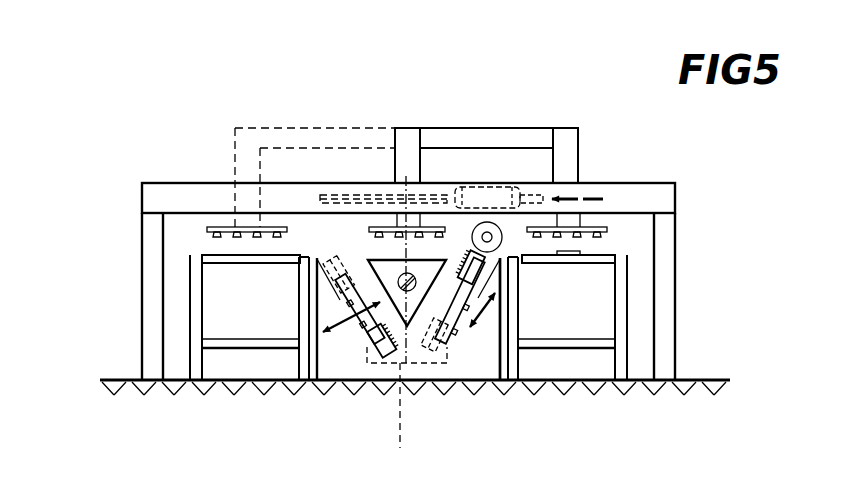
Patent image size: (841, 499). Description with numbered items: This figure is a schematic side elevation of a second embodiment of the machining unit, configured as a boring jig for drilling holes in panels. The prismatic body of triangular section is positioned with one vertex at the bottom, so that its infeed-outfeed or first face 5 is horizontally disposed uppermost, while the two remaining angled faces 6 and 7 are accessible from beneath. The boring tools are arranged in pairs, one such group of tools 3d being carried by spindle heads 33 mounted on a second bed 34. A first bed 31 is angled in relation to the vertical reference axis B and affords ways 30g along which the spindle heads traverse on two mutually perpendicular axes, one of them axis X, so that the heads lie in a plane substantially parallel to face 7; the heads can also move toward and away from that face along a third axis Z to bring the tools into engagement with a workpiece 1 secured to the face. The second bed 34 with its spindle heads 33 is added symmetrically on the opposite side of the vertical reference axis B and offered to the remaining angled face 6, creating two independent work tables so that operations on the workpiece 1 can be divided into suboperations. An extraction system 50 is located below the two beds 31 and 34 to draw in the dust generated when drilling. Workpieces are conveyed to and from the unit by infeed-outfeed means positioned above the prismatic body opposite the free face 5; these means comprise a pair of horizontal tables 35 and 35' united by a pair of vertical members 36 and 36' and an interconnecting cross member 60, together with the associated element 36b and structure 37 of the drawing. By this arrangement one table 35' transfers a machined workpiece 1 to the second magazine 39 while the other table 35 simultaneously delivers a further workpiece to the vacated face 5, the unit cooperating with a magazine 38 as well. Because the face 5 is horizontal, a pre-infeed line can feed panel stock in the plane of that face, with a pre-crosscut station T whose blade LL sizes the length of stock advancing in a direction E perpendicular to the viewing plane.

The workpiece 1 is at (572, 256).
The first face 5 is at (373, 252).
The angled face 6 is at (362, 272).
The angled face 7 is at (423, 312).
The group of tools 3d is at (370, 363).
The ways 30g is at (457, 332).
The bed 31 is at (490, 333).
The spindle heads 33 is at (335, 293).
The second bed 34 is at (383, 347).
The horizontal table 35 is at (643, 180).
The horizontal table 35' is at (382, 137).
The vertical member 36 is at (423, 136).
The vertical member 36' is at (404, 200).
The pivot arm 36b is at (490, 258).
The portal beam 37 is at (160, 197).
The magazine 38 is at (612, 245).
The second magazine 39 is at (188, 243).
The extraction system 50 is at (399, 422).
The cross member 60 is at (508, 137).
The vertical reference axis B is at (393, 162).
The direction E is at (598, 196).
The blade LL is at (474, 237).
The pre-crosscut station T is at (480, 186).
The axis X is at (484, 306).
The third axis Z is at (351, 332).